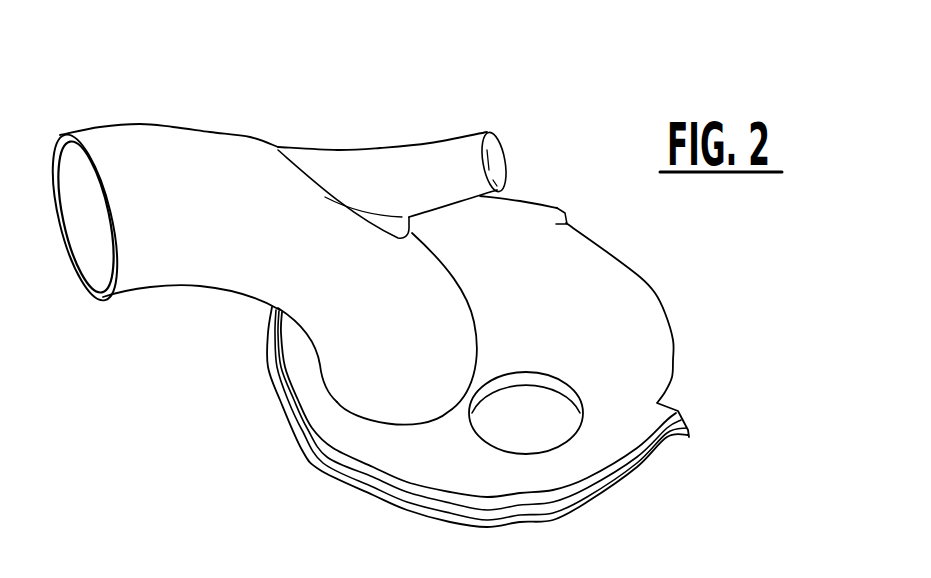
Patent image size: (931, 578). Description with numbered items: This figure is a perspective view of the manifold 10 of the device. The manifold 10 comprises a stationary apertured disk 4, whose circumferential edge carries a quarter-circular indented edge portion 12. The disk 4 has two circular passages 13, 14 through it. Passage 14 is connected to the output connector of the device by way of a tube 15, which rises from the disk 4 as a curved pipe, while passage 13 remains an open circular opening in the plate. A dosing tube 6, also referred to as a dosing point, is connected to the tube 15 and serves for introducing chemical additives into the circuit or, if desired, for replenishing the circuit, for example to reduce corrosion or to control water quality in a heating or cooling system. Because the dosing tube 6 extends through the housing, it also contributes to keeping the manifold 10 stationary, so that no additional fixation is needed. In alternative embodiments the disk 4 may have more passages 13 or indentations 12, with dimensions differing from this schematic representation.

The manifold 10 is at (172, 388).
The circumferential quarter-circular indented edge portion 12 is at (712, 285).
The stationary apertured disk 4 is at (615, 283).
The dosing tube 6 is at (457, 143).
The circular passage 13 is at (537, 373).
The circular passage 14 is at (387, 387).
The tube 15 is at (173, 140).